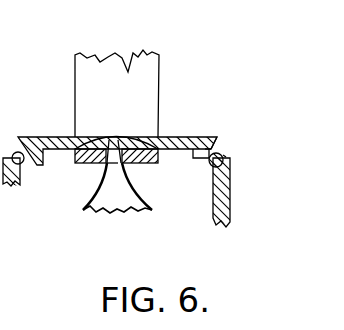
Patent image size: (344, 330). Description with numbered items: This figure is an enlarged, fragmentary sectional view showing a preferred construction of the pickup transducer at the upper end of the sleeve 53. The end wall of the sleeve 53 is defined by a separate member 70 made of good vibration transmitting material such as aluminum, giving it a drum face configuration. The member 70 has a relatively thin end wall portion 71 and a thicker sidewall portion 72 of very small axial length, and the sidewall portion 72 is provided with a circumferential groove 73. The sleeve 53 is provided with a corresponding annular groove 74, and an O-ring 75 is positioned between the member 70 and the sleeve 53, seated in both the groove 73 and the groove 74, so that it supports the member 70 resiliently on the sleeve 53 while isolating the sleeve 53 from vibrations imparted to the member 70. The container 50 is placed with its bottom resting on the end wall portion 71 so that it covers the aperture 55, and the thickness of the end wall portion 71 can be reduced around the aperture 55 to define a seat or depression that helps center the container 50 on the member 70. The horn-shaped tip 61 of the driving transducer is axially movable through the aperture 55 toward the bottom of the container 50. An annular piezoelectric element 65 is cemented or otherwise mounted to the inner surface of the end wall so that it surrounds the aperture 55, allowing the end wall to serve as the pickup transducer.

The container 50 is at (145, 58).
The sleeve 53 is at (230, 207).
The aperture 55 is at (110, 140).
The horn-shaped tip 61 is at (107, 192).
The piezoelectric element 65 is at (157, 168).
The member 70 is at (219, 138).
The end wall portion 71 is at (177, 138).
The sidewall portion 72 is at (215, 147).
The circumferential groove 73 is at (198, 160).
The annular groove 74 is at (230, 173).
The O-ring 75 is at (224, 156).